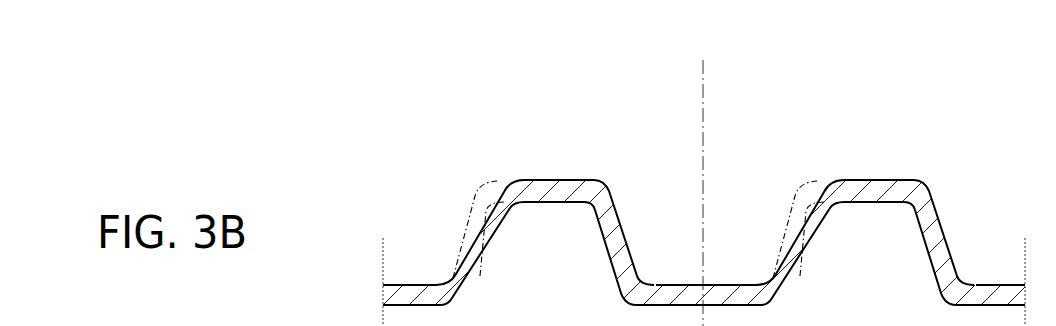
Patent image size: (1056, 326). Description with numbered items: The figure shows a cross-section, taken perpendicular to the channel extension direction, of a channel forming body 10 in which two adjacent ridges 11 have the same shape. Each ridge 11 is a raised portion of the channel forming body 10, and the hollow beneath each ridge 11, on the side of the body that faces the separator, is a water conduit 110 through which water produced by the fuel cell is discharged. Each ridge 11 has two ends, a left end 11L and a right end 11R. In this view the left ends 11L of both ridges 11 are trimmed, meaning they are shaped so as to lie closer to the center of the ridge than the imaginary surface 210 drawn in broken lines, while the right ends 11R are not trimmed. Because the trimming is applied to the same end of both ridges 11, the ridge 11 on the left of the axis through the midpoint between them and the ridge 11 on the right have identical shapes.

The channel forming body 10 is at (550, 78).
The ridge 11 is at (438, 227).
The left end of ridge 11L is at (506, 183).
The right end of ridge 11R is at (607, 188).
The water conduit 110 is at (572, 243).
The imaginary surface 210 is at (473, 190).